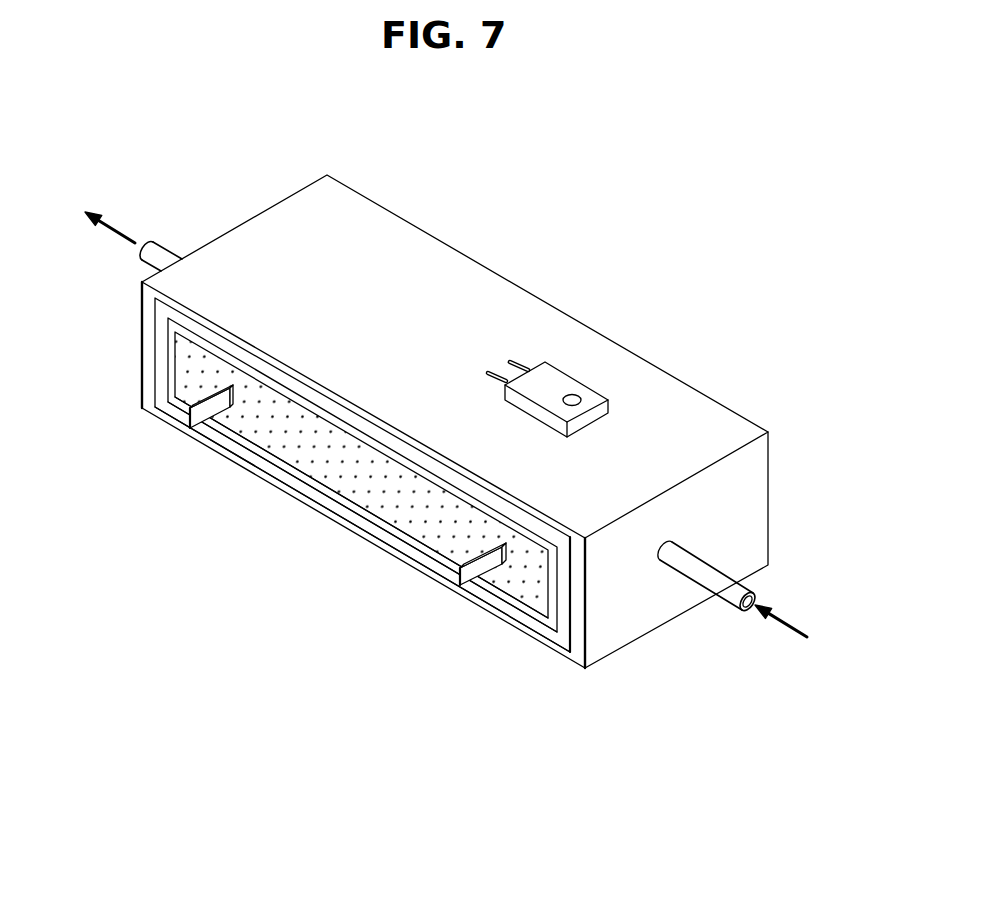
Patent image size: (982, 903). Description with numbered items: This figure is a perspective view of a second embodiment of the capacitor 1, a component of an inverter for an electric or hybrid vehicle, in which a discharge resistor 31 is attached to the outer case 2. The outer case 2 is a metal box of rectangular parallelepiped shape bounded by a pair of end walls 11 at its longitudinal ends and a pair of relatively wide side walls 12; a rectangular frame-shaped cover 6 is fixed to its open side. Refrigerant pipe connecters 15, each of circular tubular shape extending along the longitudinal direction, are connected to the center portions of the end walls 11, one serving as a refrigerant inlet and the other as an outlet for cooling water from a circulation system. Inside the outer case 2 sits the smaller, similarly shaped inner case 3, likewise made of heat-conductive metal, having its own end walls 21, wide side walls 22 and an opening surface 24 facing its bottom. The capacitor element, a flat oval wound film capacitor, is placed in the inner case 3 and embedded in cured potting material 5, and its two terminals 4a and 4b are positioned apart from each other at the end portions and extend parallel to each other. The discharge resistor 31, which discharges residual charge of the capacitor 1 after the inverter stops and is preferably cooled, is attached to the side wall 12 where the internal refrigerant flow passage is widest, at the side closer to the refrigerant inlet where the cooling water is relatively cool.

The capacitor 1 is at (428, 449).
The outer case 2 is at (578, 332).
The inner case 3 is at (318, 488).
The terminal 4a is at (202, 418).
The terminal 4b is at (477, 572).
The potting material 5 is at (400, 493).
The cover 6 is at (523, 620).
The end wall 11 is at (147, 358).
The side wall 12 is at (412, 270).
The refrigerant pipe connecter 15 is at (167, 255).
The end wall 21 is at (170, 380).
The side wall 22 is at (352, 507).
The opening surface 24 is at (290, 458).
The discharge resistor 31 is at (548, 382).